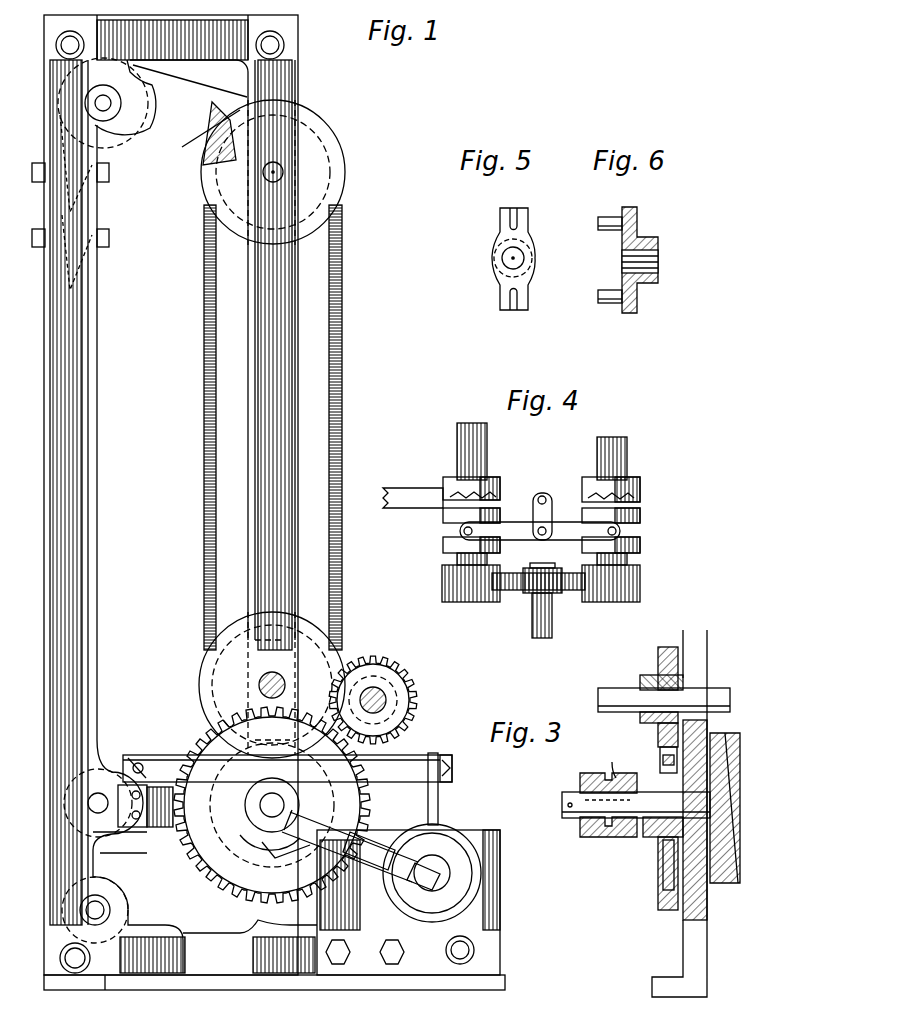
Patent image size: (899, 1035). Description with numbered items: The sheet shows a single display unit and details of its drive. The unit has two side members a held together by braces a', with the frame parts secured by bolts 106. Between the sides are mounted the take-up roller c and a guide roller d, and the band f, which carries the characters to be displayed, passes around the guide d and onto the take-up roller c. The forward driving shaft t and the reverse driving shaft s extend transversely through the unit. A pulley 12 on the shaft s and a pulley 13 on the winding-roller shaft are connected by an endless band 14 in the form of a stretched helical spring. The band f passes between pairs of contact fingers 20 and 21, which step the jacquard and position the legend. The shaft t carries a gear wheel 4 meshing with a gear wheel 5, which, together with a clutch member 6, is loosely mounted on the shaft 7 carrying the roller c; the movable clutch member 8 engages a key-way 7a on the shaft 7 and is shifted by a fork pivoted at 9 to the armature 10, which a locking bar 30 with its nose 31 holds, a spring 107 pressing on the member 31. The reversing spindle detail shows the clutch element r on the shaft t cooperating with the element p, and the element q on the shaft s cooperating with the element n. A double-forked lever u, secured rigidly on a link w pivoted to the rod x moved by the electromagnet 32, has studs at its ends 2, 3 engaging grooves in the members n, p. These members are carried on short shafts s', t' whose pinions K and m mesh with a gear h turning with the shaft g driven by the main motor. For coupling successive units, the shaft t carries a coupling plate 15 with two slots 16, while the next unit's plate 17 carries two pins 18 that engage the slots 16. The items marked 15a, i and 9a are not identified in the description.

In FIG. 1, the side members a is at (274, 502).
In FIG. 3, the side members a is at (699, 813).
In FIG. 1, the braces a' is at (194, 509).
In FIG. 1, the band f is at (68, 552).
In FIG. 1, the guide roller d is at (125, 103).
In FIG. 1, the electromagnet 32 is at (65, 118).
In FIG. 1, the contact fingers 20 is at (62, 205).
In FIG. 1, the contact fingers 21 is at (65, 285).
In FIG. 1, the pulley 13 is at (345, 168).
In FIG. 1, the endless band 14 is at (343, 305).
In FIG. 1, the pulley 12 is at (200, 678).
In FIG. 1, the reverse driving shaft s is at (254, 686).
In FIG. 4, the reverse driving shaft s is at (482, 451).
In FIG. 1, the forward driving shaft t is at (388, 700).
In FIG. 4, the forward driving shaft t is at (626, 458).
In FIG. 1, the shaft 7 is at (300, 795).
In FIG. 3, the shaft 7 is at (580, 815).
In FIG. 1, the bolts 106 is at (149, 769).
In FIG. 1, the spring 107 is at (452, 762).
In FIG. 1, the locking bar 30 is at (422, 748).
In FIG. 1, the nose 31 is at (438, 800).
In FIG. 1, the gear wheel 5 is at (185, 745).
In FIG. 3, the gear wheel 5 is at (660, 762).
In FIG. 1, the hub 15a is at (258, 806).
In FIG. 1, the clutch member 8 is at (295, 812).
In FIG. 3, the clutch member 8 is at (583, 778).
In FIG. 1, the pins 18 is at (290, 854).
In FIG. 6, the pins 18 is at (608, 232).
In FIG. 1, the pivot 9 is at (395, 848).
In FIG. 1, the armature 10 is at (440, 840).
In FIG. 4, the double-forked lever u is at (522, 522).
In FIG. 4, the link w is at (548, 495).
In FIG. 4, the rod x is at (400, 482).
In FIG. 4, the clutch element q is at (450, 488).
In FIG. 4, the clutch element n is at (448, 518).
In FIG. 4, the clutch element r is at (641, 487).
In FIG. 4, the clutch element p is at (641, 518).
In FIG. 4, the end of forked lever 3 is at (641, 543).
In FIG. 4, the end of forked lever 2 is at (475, 535).
In FIG. 4, the short shaft t' is at (633, 564).
In FIG. 4, the short shaft s' is at (448, 574).
In FIG. 4, the pinion K is at (470, 604).
In FIG. 4, the pinion m is at (641, 596).
In FIG. 4, the gear h is at (576, 590).
In FIG. 4, the shaft g is at (538, 612).
In FIG. 3, the gear wheel 4 is at (658, 660).
In FIG. 3, the shaft i is at (612, 698).
In FIG. 3, the take-up roller c is at (730, 742).
In FIG. 3, the pin 9a is at (599, 760).
In FIG. 3, the key-way 7a is at (608, 838).
In FIG. 3, the clutch member 6 is at (652, 840).
In FIG. 5, the coupling plate 15 is at (500, 258).
In FIG. 5, the slots 16 is at (512, 220).
In FIG. 6, the plate 17 is at (650, 238).